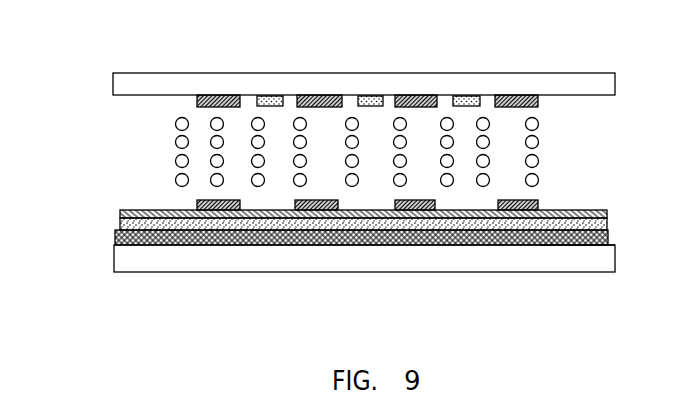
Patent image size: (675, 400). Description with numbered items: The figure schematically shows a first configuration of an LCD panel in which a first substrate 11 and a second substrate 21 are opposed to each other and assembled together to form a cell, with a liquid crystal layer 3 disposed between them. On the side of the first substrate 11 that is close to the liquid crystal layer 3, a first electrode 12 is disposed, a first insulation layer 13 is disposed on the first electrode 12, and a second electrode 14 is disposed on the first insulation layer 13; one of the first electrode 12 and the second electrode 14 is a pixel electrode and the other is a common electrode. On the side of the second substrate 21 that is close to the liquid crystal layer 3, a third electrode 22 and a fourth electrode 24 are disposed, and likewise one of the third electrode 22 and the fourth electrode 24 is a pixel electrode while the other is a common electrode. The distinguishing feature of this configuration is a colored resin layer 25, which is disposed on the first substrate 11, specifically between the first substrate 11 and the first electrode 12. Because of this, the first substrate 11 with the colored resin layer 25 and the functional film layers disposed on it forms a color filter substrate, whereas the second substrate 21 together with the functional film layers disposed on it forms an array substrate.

The second substrate 21 is at (364, 58).
The fourth electrode 24 is at (493, 95).
The third electrode 22 is at (457, 108).
The liquid crystal layer 3 is at (180, 158).
The second electrode 14 is at (497, 208).
The first electrode 12 is at (363, 259).
The first insulation layer 13 is at (361, 252).
The first substrate 11 is at (364, 282).
The colored resin layer 25 is at (590, 282).